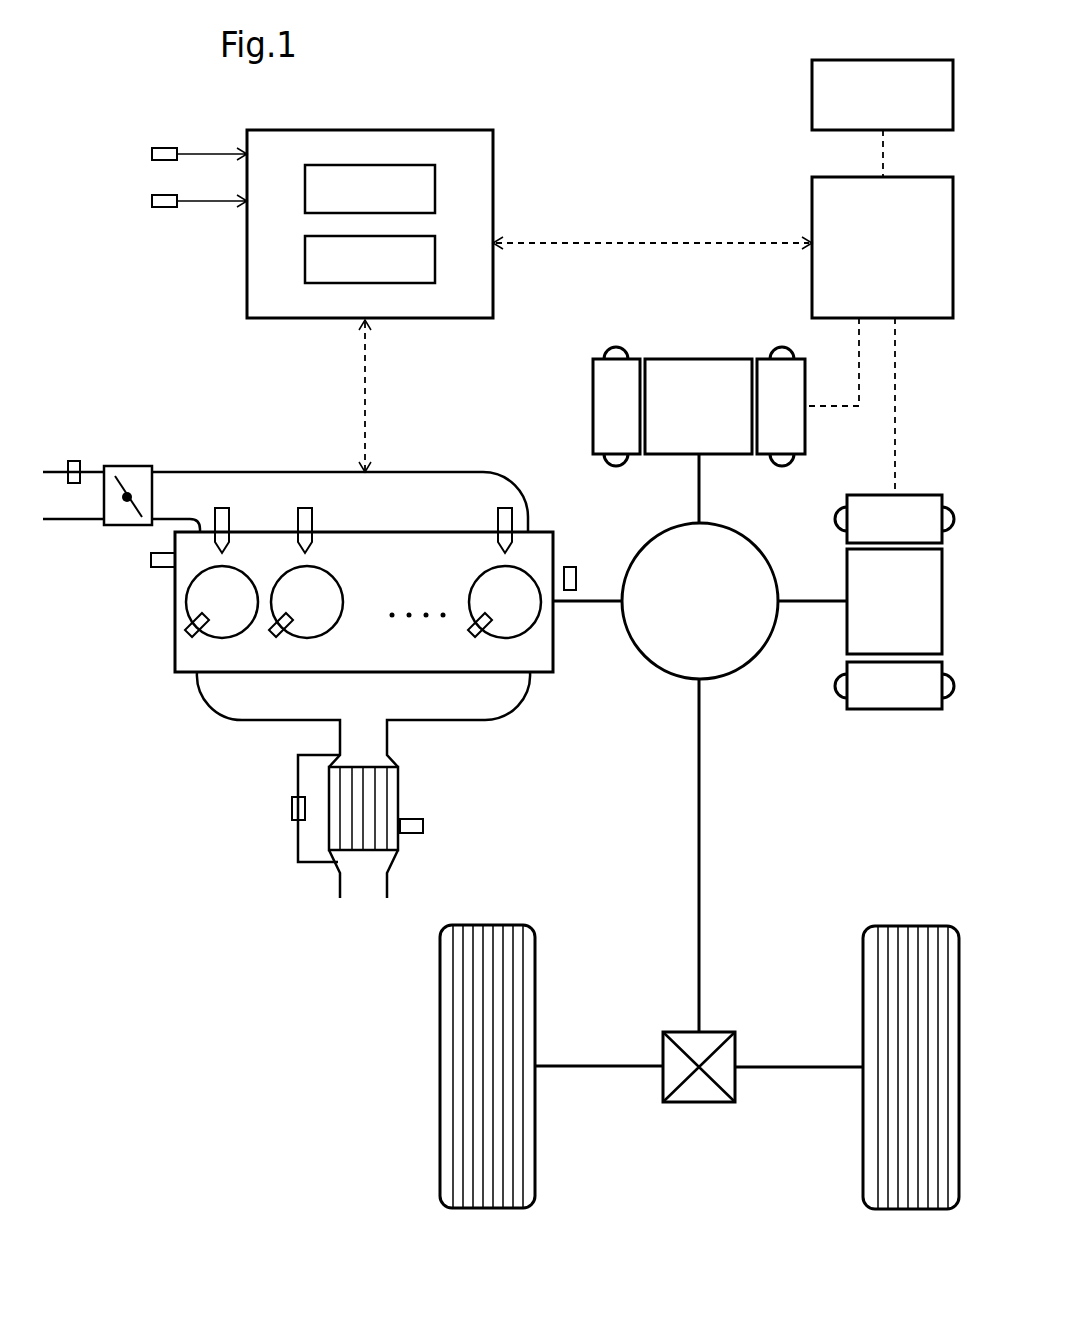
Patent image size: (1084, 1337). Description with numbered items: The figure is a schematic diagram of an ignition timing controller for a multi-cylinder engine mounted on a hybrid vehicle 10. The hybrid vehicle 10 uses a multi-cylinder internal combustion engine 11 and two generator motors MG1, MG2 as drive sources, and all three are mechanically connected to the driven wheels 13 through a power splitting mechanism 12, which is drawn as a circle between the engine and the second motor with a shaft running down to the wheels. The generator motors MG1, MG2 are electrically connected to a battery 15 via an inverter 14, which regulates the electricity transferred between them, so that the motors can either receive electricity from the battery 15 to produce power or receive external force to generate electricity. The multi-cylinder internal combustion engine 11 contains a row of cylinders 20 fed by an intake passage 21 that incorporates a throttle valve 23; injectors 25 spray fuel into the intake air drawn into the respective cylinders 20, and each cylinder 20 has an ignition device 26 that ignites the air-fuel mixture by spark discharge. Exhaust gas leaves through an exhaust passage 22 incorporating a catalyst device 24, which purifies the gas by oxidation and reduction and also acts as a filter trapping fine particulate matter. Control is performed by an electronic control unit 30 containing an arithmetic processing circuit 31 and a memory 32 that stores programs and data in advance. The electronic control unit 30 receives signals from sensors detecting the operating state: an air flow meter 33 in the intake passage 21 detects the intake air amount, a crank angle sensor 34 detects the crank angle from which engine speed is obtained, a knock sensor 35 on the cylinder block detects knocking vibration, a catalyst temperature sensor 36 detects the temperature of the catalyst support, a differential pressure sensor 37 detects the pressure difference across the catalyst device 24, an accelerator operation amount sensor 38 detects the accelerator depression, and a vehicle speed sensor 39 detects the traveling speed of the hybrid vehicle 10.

The hybrid vehicle 10 is at (104, 107).
The multi-cylinder internal combustion engine 11 is at (186, 694).
The power splitting mechanism 12 is at (658, 672).
The driven wheels 13 is at (908, 926).
The inverter 14 is at (812, 201).
The battery 15 is at (812, 93).
The cylinders 20 is at (473, 582).
The intake passage 21 is at (80, 522).
The exhaust passage 22 is at (388, 728).
The throttle valve 23 is at (140, 510).
The catalyst device 24 is at (393, 782).
The injectors 25 is at (498, 519).
The ignition device 26 is at (501, 660).
The electronic control unit 30 is at (493, 157).
The arithmetic processing circuit 31 is at (435, 190).
The memory 32 is at (435, 263).
The air flow meter 33 is at (82, 467).
The crank angle sensor 34 is at (577, 577).
The knock sensor 35 is at (163, 568).
The catalyst temperature sensor 36 is at (413, 834).
The differential pressure sensor 37 is at (290, 808).
The accelerator operation amount sensor 38 is at (165, 148).
The vehicle speed sensor 39 is at (165, 207).
The generator motor MG1 is at (593, 407).
The generator motor MG2 is at (895, 709).